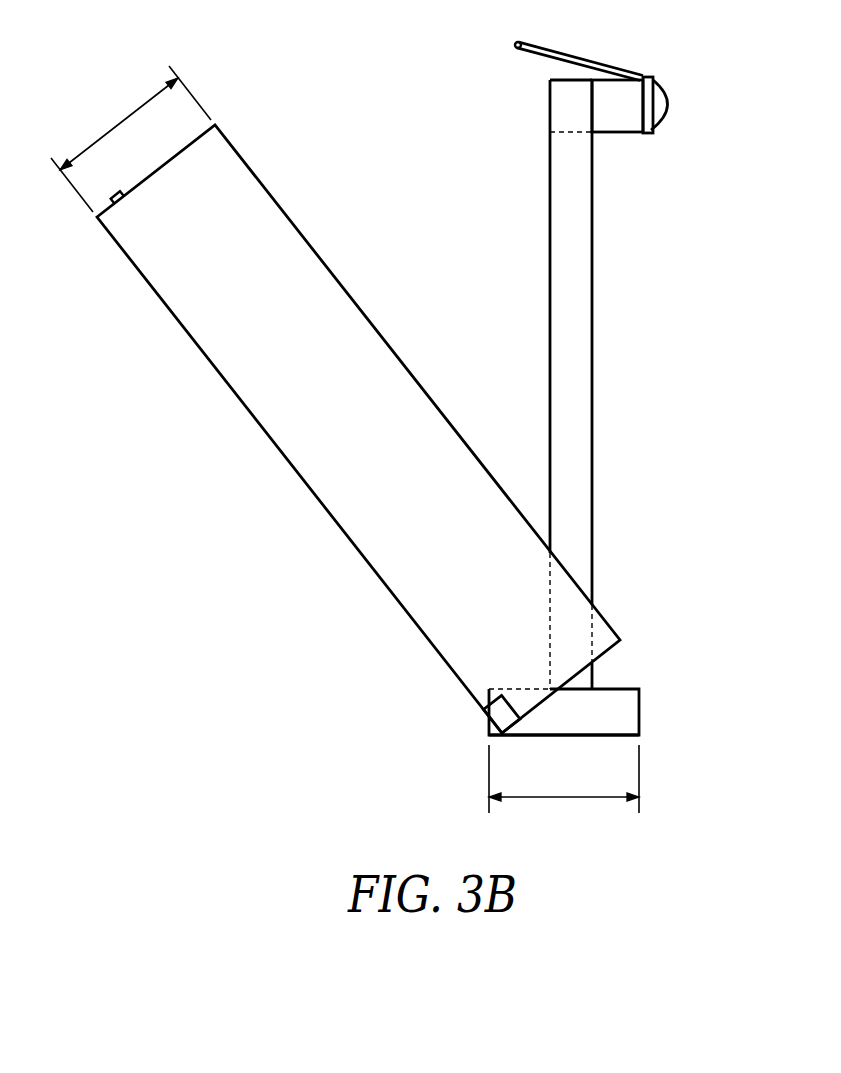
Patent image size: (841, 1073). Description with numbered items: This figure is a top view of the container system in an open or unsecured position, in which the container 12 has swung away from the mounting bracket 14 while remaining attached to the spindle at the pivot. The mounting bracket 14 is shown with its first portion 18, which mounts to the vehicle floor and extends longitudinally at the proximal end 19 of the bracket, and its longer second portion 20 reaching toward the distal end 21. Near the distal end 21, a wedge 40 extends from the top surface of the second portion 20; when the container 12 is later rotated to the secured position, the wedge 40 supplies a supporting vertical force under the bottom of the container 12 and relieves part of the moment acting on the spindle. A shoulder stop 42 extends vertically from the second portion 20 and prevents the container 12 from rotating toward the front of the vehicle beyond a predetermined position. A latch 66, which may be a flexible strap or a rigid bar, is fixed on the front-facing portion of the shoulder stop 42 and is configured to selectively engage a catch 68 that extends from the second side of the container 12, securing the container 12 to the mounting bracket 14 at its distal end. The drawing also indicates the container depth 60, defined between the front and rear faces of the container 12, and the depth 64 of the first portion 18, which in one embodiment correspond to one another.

The container 12 is at (335, 399).
The mounting bracket 14 is at (587, 443).
The first portion 18 is at (595, 779).
The proximal end 19 is at (587, 735).
The second portion 20 is at (585, 364).
The distal end 21 is at (568, 82).
The wedge 40 is at (628, 133).
The shoulder stop 42 is at (650, 130).
The container depth 60 is at (117, 123).
The depth of the first portion 64 is at (555, 797).
The latch 66 is at (577, 62).
The catch 68 is at (114, 198).